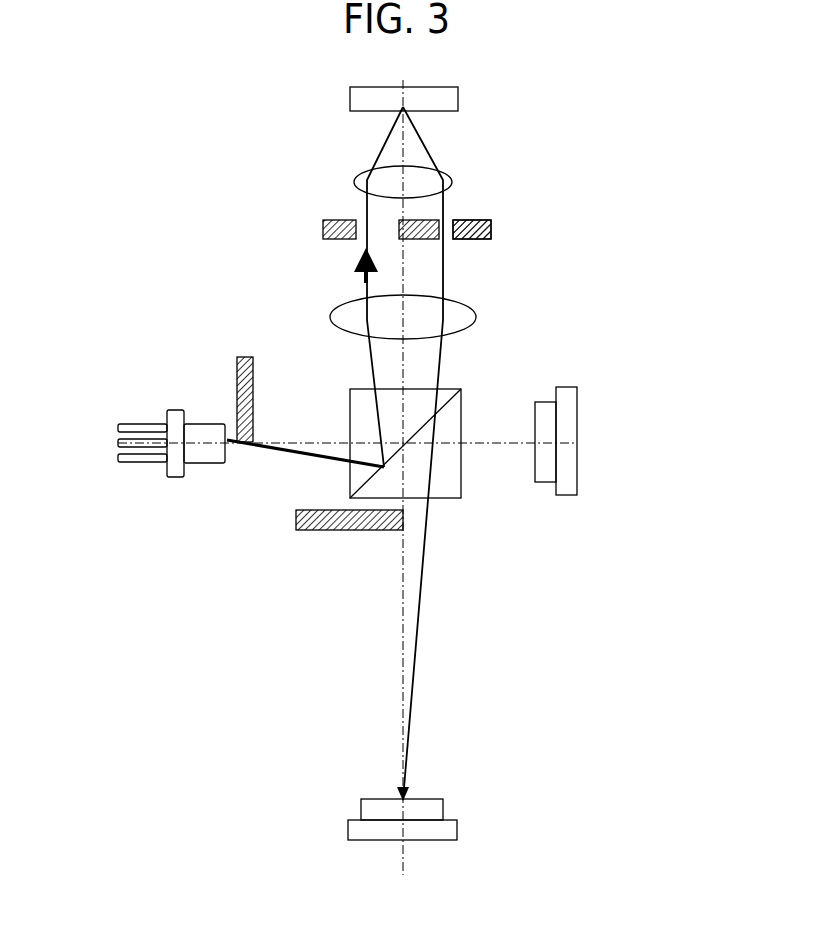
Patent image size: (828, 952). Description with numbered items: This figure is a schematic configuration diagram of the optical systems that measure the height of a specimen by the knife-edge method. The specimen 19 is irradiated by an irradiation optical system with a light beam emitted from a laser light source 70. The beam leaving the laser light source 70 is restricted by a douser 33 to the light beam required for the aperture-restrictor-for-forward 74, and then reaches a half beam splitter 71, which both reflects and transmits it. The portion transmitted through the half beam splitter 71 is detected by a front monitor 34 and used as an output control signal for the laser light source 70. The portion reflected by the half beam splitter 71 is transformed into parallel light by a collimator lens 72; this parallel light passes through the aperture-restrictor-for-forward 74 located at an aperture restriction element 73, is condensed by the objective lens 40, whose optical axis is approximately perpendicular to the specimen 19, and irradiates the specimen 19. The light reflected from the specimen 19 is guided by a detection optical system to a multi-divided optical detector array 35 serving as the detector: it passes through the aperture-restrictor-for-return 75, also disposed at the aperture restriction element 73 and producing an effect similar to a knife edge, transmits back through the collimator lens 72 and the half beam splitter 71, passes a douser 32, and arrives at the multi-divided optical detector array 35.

The specimen 19 is at (353, 103).
The objective lens 40 is at (352, 186).
The aperture restriction element 73 is at (318, 240).
The aperture-restrictor-for-forward 74 is at (320, 273).
The aperture-restrictor-for-return 75 is at (452, 218).
The collimator lens 72 is at (466, 330).
The half beam splitter 71 is at (350, 412).
The laser light source 70 is at (167, 420).
The douser 33 is at (235, 377).
The front monitor 34 is at (565, 428).
The douser 32 is at (296, 523).
The multi-divided optical detector array 35 is at (387, 810).